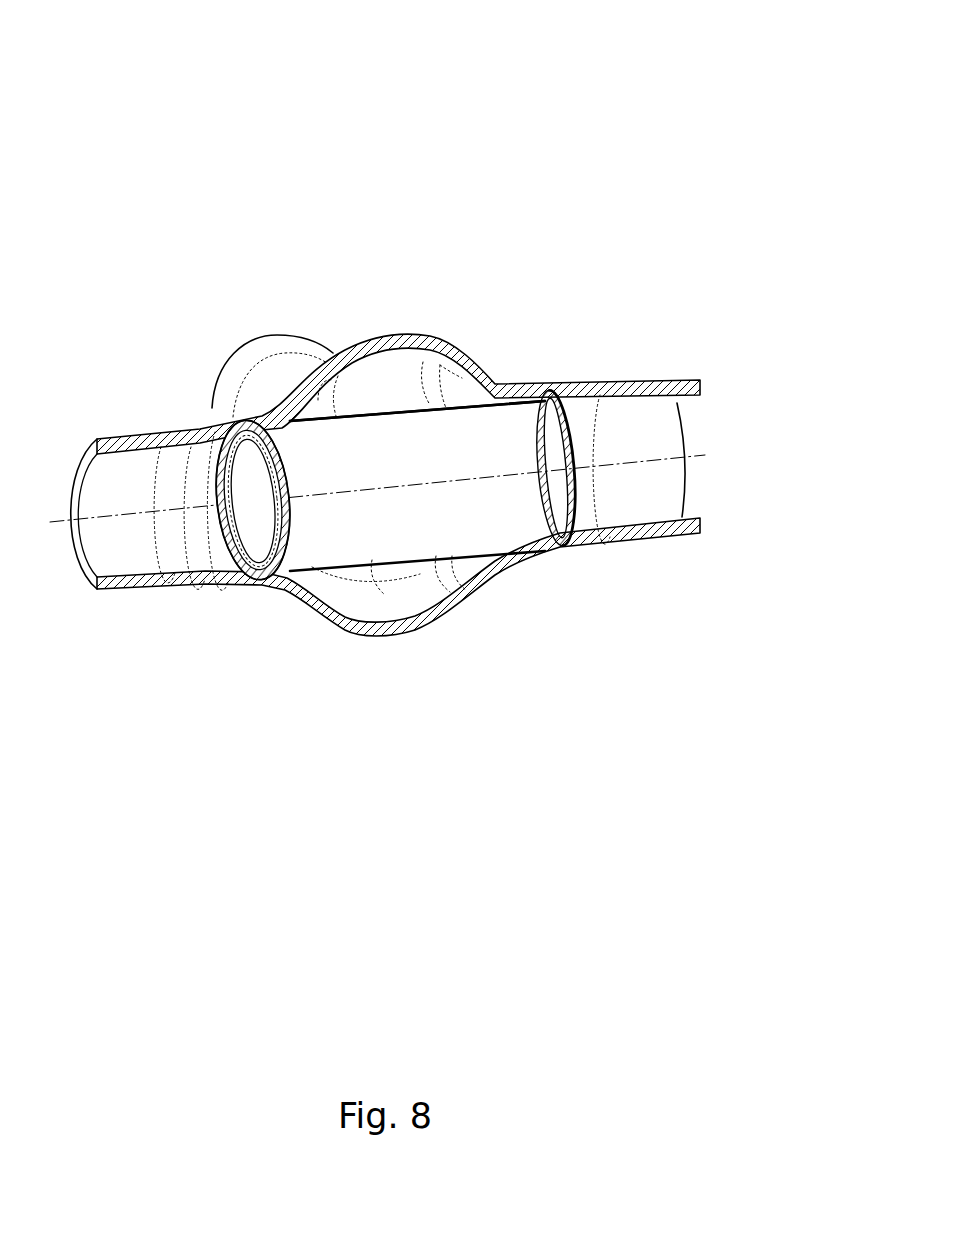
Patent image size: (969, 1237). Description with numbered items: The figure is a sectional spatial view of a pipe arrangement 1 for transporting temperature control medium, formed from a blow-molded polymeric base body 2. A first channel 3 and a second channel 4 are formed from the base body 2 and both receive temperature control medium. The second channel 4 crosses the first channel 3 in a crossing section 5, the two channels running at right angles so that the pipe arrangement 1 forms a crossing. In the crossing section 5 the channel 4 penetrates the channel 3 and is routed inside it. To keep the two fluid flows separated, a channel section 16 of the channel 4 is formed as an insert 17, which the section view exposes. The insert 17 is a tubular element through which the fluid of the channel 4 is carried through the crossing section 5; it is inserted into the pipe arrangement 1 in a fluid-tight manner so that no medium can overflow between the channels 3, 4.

The pipe arrangement 1 is at (237, 157).
The base body 2 is at (320, 620).
The first channel 3 is at (268, 353).
The second channel 4 is at (135, 545).
The crossing section 5 is at (351, 315).
The channel section 16 is at (455, 458).
The insert 17 is at (400, 460).